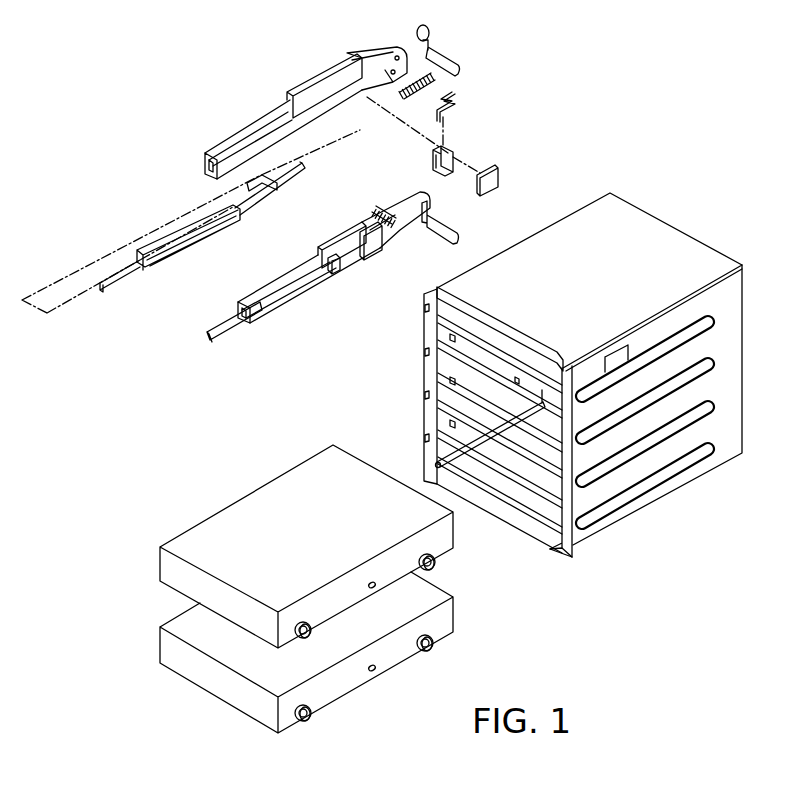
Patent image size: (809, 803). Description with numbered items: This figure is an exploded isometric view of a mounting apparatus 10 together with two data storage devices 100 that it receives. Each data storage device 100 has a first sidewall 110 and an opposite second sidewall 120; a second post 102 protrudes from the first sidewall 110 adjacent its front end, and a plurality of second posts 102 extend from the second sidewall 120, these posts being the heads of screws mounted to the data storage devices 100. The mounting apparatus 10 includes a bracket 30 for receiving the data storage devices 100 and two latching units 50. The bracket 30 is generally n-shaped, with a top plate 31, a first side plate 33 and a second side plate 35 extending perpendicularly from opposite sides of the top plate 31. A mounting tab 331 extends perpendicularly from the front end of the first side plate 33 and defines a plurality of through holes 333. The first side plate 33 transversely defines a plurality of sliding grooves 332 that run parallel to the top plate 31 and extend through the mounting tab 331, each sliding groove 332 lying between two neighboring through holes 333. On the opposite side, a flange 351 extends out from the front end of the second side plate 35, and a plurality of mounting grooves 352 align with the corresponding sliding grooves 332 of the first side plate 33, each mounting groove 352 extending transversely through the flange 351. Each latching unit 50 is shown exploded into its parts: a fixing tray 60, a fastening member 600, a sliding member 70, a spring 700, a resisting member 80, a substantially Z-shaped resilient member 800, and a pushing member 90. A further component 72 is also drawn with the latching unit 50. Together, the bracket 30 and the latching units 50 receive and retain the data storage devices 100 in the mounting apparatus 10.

The mounting apparatus 10 is at (290, 338).
The bracket 30 is at (542, 384).
The top plate 31 is at (693, 257).
The first side plate 33 is at (482, 445).
The second side plate 35 is at (670, 420).
The latching unit 50 is at (293, 308).
The fixing tray 60 is at (255, 132).
The sliding member 70 is at (300, 190).
The slide bar 72 is at (223, 320).
The resisting member 80 is at (372, 257).
The pushing member 90 is at (445, 53).
The data storage device 100 is at (296, 589).
The second post 102 is at (436, 563).
The first sidewall 110 is at (158, 565).
The second sidewall 120 is at (383, 573).
The mounting tab 331 is at (422, 330).
The sliding groove 332 is at (422, 358).
The through hole 333 is at (428, 307).
The flange 351 is at (575, 553).
The mounting groove 352 is at (682, 467).
The fastening member 600 is at (372, 237).
The spring 700 is at (387, 213).
The resilient member 800 is at (453, 103).